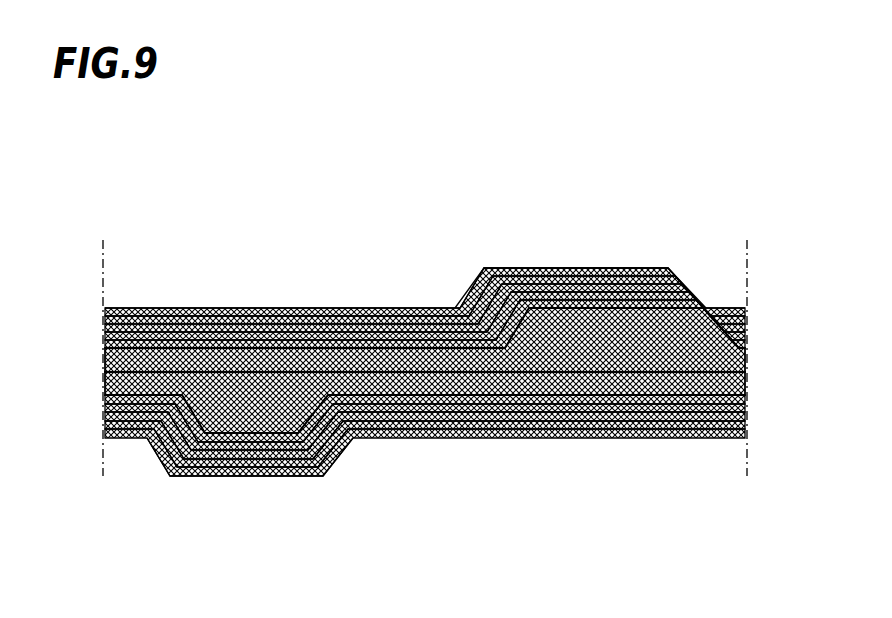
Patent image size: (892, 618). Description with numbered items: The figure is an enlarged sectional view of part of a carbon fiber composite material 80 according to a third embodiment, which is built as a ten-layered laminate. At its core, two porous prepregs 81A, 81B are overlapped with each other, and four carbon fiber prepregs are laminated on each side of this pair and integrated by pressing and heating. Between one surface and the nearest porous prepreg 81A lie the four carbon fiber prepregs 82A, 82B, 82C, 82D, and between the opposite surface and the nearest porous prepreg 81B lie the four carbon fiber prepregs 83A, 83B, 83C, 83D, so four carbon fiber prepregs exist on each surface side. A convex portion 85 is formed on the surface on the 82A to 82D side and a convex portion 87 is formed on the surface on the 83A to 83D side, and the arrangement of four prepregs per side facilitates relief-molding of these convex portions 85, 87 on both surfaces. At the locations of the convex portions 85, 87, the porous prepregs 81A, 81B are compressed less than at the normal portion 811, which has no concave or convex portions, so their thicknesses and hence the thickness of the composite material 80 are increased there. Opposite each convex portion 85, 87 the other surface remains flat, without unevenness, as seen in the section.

The carbon fiber composite material 80 is at (632, 182).
The normal portion 811 is at (130, 308).
The carbon fiber prepreg 83D is at (746, 311).
The carbon fiber prepreg 83C is at (746, 322).
The carbon fiber prepreg 83B is at (746, 333).
The carbon fiber prepreg 83A is at (745, 347).
The porous prepreg 81B is at (745, 364).
The porous prepreg 81A is at (745, 384).
The carbon fiber prepreg 82D is at (745, 399).
The carbon fiber prepreg 82C is at (746, 407).
The carbon fiber prepreg 82B is at (746, 418).
The carbon fiber prepreg 82A is at (746, 430).
The convex portion 87 is at (572, 265).
The convex portion 85 is at (243, 474).